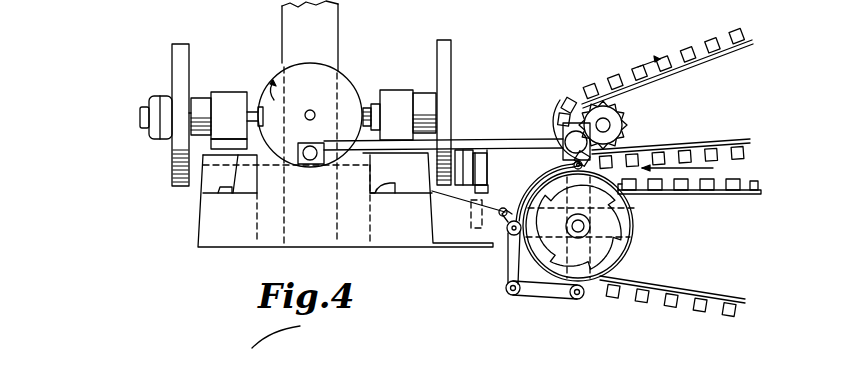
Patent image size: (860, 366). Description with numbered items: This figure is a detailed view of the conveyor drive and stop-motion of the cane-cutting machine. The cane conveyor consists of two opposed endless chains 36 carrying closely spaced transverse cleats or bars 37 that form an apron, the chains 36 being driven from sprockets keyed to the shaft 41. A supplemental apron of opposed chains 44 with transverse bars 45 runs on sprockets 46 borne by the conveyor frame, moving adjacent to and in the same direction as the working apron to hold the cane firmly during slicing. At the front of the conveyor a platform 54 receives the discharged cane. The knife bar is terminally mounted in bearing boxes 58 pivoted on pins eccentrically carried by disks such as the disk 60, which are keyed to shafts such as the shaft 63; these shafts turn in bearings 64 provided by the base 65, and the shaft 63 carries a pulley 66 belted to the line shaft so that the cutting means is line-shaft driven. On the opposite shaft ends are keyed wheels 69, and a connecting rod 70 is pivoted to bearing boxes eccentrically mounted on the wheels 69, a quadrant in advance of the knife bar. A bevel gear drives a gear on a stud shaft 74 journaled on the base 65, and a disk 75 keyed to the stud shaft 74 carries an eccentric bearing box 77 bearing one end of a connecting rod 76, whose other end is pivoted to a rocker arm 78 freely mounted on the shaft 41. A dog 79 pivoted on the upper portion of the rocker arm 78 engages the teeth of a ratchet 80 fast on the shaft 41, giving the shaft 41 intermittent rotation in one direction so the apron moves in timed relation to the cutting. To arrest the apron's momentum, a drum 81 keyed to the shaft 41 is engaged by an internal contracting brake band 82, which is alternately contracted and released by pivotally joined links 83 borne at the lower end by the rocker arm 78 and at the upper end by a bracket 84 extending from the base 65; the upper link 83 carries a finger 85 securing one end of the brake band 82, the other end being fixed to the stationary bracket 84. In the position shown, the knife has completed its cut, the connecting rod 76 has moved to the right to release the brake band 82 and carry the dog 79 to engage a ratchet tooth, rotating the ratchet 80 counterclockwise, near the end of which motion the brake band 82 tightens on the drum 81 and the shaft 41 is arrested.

The endless chains 36 is at (730, 197).
The cleats or bars 37 is at (738, 178).
The shaft 41 is at (590, 226).
The chains 44 is at (722, 56).
The bars 45 is at (688, 58).
The sprockets 46 is at (617, 124).
The platform 54 is at (489, 145).
The bearing boxes 58 is at (462, 155).
The disk 60 is at (448, 56).
The shaft 63 is at (368, 106).
The bearings 64 is at (226, 105).
The base 65 is at (218, 213).
The pulley 66 is at (310, 122).
The wheels 69 is at (176, 66).
The connecting rod 70 is at (140, 117).
The stud shaft 74 is at (314, 112).
The disk 75 is at (290, 72).
The connecting rod 76 is at (495, 141).
The bearing box 77 is at (300, 165).
The rocker arm 78 is at (568, 158).
The dog 79 is at (568, 172).
The ratchet 80 is at (607, 215).
The drum 81 is at (622, 250).
The brake band 82 is at (594, 280).
The links 83 is at (538, 297).
The bracket 84 is at (472, 236).
The finger 85 is at (500, 247).